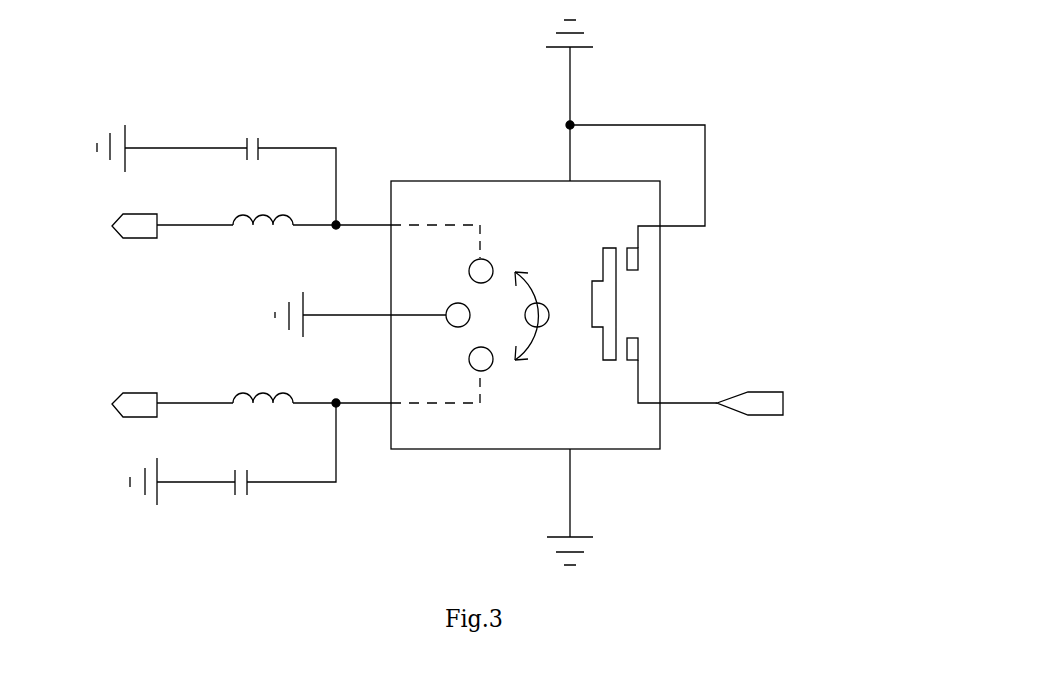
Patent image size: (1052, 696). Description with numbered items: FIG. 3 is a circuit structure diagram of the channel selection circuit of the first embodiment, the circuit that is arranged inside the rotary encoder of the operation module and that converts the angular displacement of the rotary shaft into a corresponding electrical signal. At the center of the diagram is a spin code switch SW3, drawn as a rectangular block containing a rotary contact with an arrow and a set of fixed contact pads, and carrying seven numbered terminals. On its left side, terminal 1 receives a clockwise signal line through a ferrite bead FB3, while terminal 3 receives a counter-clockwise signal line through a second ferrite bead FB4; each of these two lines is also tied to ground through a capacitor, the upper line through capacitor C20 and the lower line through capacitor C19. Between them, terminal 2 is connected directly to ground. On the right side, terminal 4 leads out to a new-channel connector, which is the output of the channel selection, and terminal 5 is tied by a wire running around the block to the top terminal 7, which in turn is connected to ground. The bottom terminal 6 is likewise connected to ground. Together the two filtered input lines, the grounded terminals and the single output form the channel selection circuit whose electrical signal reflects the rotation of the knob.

The operation module 1 is at (406, 234).
The switch pin 2 (ground) 2 is at (360, 314).
The switch pin 3 (WIFI_CCW input) 3 is at (406, 389).
The switch pin 4 (NEW_CHANNE output) 4 is at (784, 387).
The electronic circuit board 5 is at (637, 186).
The switch pin 6 (ground) 6 is at (569, 507).
The switch pin 7 (ground) 7 is at (569, 100).
The spin code switch SPIN-CODE-SWITCH-W SW3 is at (474, 369).
The capacitor C20 102 C20 is at (216, 174).
The capacitor C19 102 C19 is at (233, 454).
The ferrite bead FB3 600R/100M FB3 is at (180, 223).
The ferrite bead FB4 600R/100M FB4 is at (173, 382).